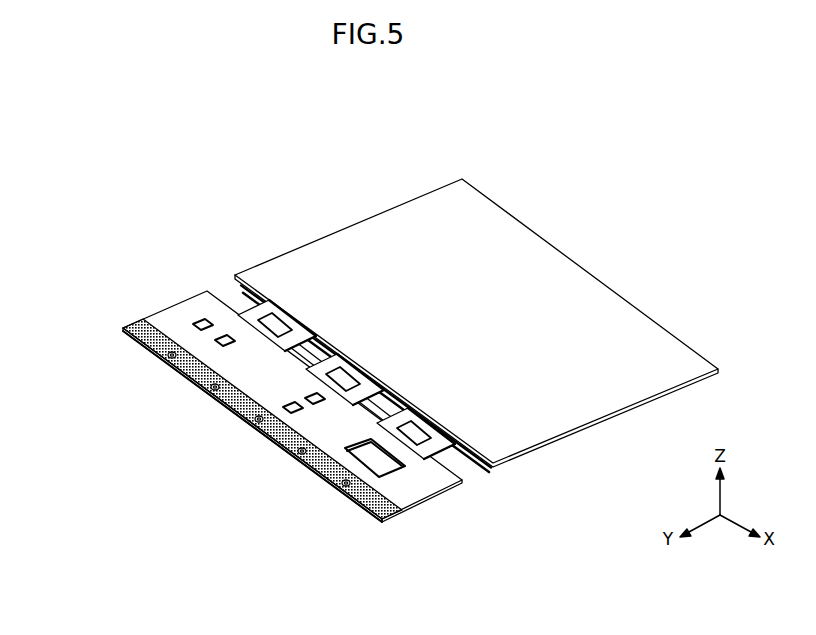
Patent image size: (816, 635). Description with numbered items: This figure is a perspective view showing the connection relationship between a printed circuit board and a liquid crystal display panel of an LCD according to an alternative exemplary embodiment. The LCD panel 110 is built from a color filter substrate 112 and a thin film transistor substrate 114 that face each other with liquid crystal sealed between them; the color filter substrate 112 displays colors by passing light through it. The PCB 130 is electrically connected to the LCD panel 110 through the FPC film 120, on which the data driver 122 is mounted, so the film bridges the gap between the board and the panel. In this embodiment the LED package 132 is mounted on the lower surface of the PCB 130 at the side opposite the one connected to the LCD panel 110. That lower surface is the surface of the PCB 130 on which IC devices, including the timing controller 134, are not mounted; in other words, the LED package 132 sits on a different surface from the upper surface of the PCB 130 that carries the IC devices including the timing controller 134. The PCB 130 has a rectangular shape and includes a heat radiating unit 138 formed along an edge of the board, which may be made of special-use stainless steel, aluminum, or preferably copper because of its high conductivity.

The LCD panel 110 is at (293, 175).
The color filter substrate 112 is at (292, 262).
The thin film transistor substrate 114 is at (245, 283).
The FPC film 120 is at (123, 329).
The data driver 122 is at (234, 283).
The PCB 130 is at (226, 367).
The LED package 132 is at (207, 393).
The timing controller 134 is at (300, 463).
The heat radiating unit 138 is at (364, 460).